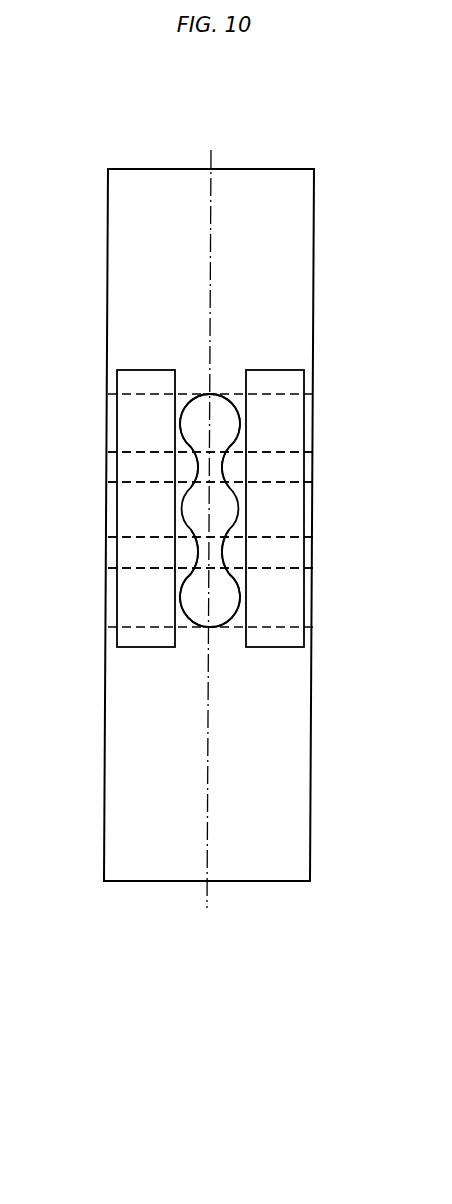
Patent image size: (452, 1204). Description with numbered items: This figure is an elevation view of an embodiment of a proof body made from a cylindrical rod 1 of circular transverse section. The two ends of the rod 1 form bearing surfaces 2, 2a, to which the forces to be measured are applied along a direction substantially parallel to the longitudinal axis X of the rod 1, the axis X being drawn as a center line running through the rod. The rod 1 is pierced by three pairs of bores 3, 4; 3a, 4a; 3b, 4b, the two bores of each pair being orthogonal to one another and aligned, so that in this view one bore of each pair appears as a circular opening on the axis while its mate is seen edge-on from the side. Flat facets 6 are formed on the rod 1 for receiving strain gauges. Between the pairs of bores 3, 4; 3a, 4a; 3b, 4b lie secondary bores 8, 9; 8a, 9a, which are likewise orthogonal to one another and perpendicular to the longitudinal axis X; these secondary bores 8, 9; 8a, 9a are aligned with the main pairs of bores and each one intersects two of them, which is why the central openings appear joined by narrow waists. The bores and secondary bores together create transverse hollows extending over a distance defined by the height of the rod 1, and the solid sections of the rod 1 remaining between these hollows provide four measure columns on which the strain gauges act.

The rod 1 is at (292, 273).
The bearing surface 2 is at (233, 169).
The bearing surface 2a is at (260, 881).
The longitudinal axis X is at (212, 261).
The bore 3 is at (190, 510).
The bore 3a is at (193, 430).
The bore 3b is at (192, 592).
The bore 4 is at (313, 512).
The bore 4a is at (313, 425).
The bore 4b is at (313, 595).
The facets 6 is at (137, 410).
The secondary bore 8 is at (202, 470).
The secondary bore 8a is at (207, 550).
The secondary bore 9 is at (313, 467).
The secondary bore 9a is at (313, 557).